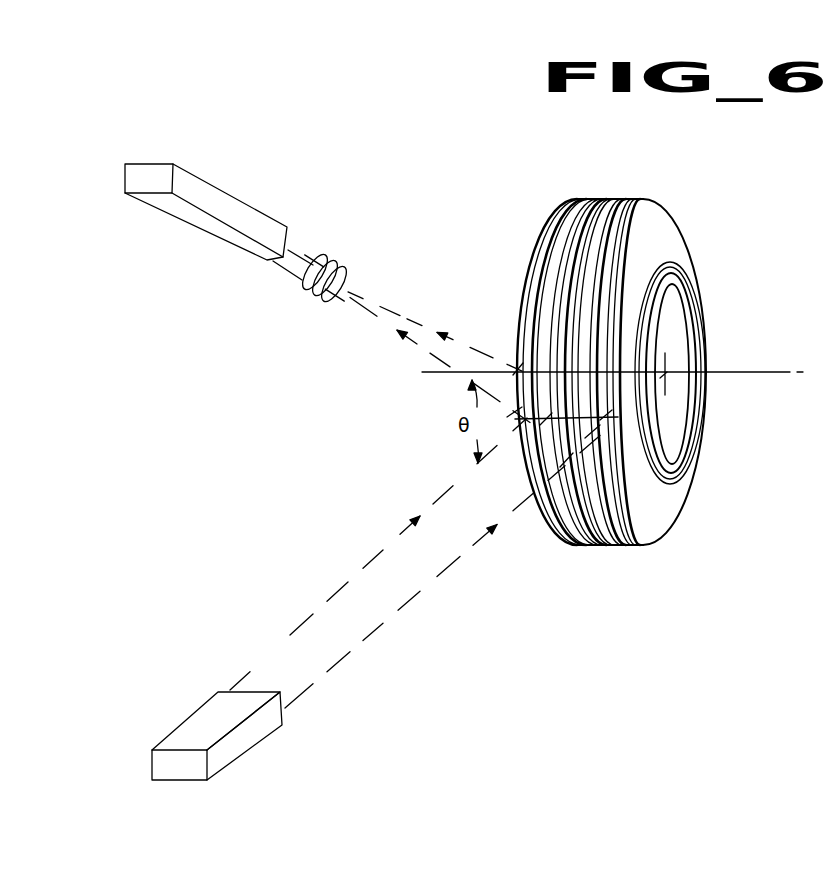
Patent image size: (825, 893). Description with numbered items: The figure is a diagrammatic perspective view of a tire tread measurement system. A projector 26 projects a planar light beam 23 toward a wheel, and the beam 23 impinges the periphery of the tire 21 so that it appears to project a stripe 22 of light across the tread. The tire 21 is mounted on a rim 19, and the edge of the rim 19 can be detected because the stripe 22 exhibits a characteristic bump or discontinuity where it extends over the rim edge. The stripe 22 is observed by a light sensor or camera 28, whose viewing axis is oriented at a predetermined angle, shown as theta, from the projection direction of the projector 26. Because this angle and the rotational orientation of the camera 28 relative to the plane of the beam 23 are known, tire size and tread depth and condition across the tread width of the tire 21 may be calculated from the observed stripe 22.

The rim 19 is at (687, 323).
The tire 21 is at (602, 196).
The stripe 22 is at (550, 422).
The beam 23 is at (377, 553).
The projector 26 is at (193, 720).
The sensor or camera 28 is at (200, 225).